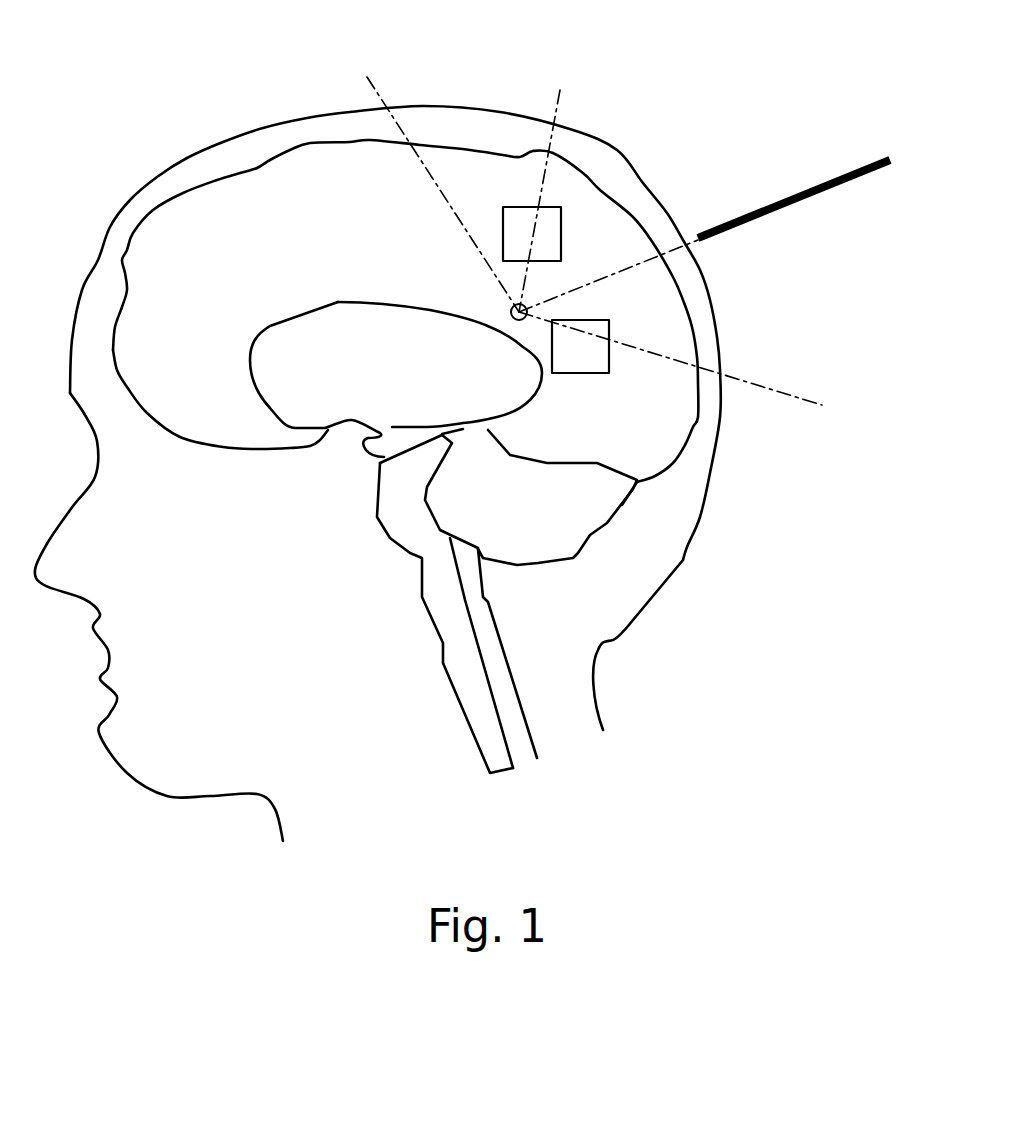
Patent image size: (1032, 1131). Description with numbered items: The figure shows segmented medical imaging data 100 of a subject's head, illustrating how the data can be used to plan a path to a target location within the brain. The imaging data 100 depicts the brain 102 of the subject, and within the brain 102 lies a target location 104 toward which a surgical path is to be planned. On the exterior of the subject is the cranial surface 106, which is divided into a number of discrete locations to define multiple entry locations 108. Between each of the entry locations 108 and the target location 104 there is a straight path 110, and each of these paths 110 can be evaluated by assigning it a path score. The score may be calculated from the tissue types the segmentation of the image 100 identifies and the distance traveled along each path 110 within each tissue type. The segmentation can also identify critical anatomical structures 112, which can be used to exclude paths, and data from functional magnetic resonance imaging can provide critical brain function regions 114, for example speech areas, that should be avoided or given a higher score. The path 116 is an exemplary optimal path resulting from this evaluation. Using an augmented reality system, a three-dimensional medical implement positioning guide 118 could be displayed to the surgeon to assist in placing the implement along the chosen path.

The segmented medical imaging data 100 is at (688, 625).
The brain 102 is at (677, 415).
The target location 104 is at (510, 309).
The cranial surface 106 is at (645, 184).
The entry locations 108 is at (388, 108).
The straight path 110 is at (559, 105).
The critical anatomical structures 112 is at (557, 207).
The critical brain function regions 114 is at (680, 465).
The optimal path 116 is at (610, 273).
The three-dimensional medical implement positioning guide 118 is at (783, 203).